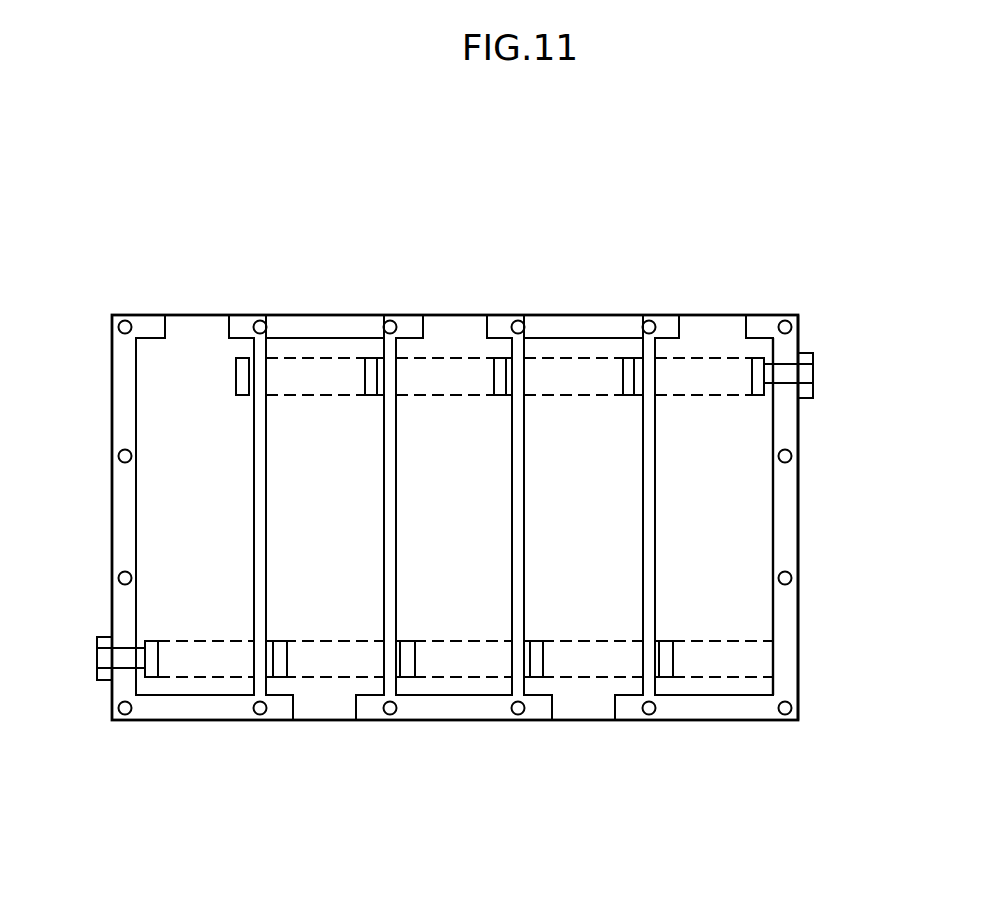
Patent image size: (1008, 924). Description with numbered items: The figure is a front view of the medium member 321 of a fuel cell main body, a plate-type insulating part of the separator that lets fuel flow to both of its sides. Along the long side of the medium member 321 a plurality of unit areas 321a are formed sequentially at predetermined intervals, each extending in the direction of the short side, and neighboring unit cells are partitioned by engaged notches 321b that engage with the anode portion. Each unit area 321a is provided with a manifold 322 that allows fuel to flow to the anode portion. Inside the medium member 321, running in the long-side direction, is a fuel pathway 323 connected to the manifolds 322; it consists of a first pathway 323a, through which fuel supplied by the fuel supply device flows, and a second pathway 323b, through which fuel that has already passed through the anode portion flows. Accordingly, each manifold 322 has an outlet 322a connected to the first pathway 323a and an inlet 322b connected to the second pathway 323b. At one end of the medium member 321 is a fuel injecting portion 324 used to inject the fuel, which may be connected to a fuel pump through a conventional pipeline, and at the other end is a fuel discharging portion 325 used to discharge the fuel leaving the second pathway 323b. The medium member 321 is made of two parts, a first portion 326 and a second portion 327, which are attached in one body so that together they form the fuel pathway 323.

The medium member 321 is at (815, 523).
The unit area 321a is at (580, 566).
The engaged notch 321b is at (642, 560).
The manifold 322 is at (454, 517).
The outlet 322a is at (416, 660).
The inlet 322b is at (494, 375).
The fuel pathway 323 is at (455, 510).
The first pathway 323a is at (213, 677).
The second pathway 323b is at (708, 357).
The fuel injecting portion 324 is at (97, 659).
The fuel discharging portion 325 is at (813, 372).
The first portion 326 is at (838, 517).
The second portion 327 is at (798, 680).